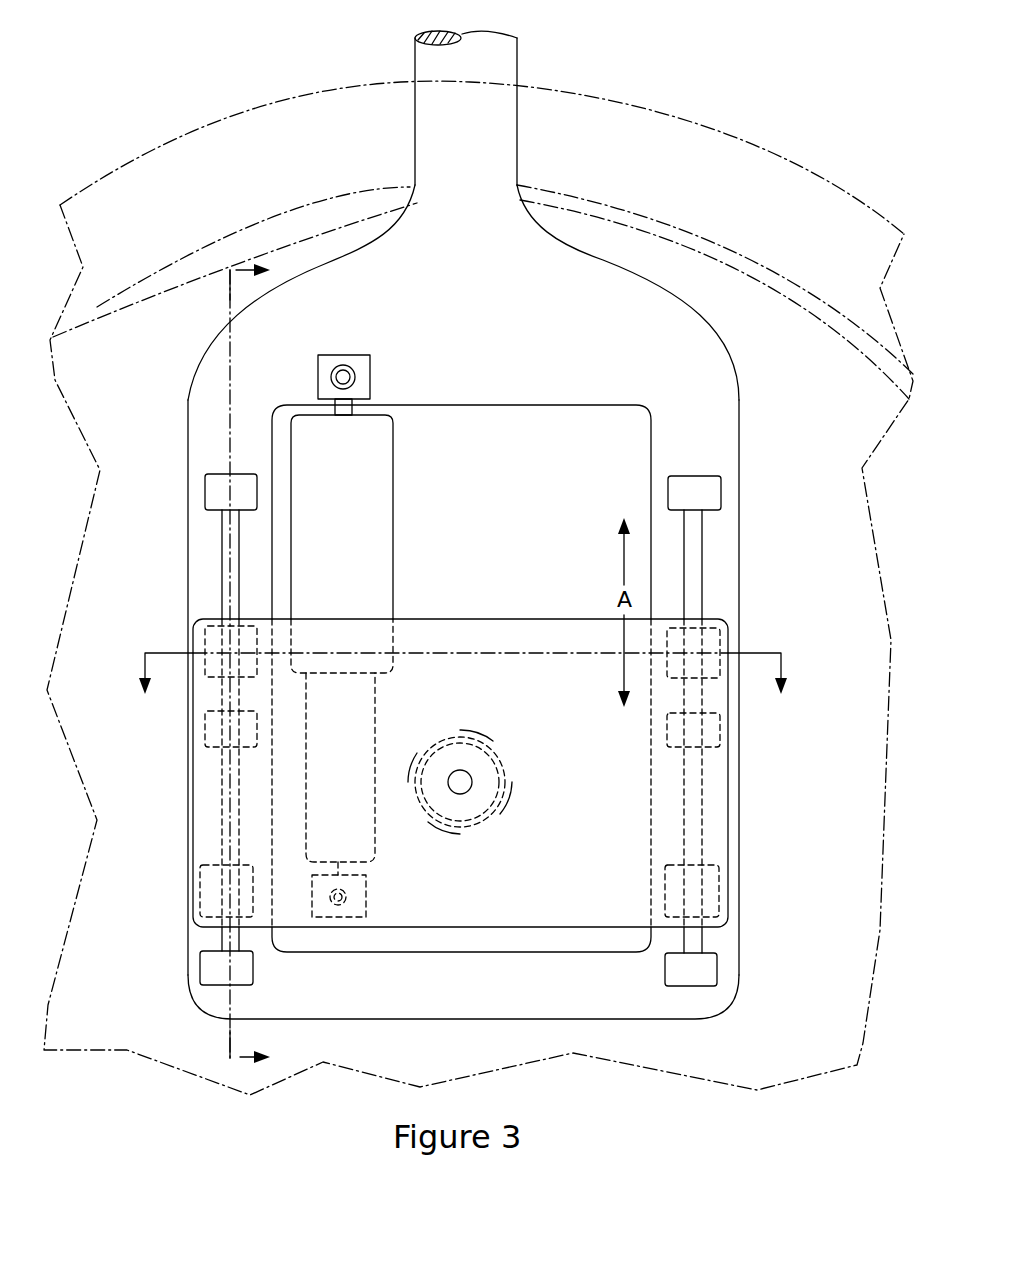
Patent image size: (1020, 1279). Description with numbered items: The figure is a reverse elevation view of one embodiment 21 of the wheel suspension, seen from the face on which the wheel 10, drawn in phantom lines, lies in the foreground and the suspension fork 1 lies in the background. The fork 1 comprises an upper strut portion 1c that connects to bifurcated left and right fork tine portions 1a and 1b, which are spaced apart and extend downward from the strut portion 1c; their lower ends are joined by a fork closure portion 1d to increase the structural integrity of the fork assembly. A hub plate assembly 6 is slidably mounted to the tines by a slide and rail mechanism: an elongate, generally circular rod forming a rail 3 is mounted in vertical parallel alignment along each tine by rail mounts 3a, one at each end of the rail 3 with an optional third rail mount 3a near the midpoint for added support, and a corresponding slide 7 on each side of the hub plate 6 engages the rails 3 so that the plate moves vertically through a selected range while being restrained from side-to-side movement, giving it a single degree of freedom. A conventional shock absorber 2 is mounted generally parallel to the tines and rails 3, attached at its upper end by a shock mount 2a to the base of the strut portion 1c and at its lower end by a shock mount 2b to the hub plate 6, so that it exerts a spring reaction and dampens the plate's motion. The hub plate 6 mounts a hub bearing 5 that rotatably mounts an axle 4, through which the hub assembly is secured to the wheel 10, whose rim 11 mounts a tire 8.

The suspension fork 1 is at (605, 262).
The right fork tine portion 1a is at (741, 513).
The left fork tine portion 1b is at (187, 458).
The upper fork strut portion 1c is at (518, 72).
The fork closure portion 1d is at (428, 1020).
The shock absorber 2 is at (394, 522).
The upper shock mount 2a is at (350, 366).
The lower shock mount 2b is at (352, 897).
The rail 3 is at (220, 584).
The rail mount 3a is at (723, 480).
The axle 4 is at (472, 782).
The hub bearing 5 is at (470, 735).
The hub plate assembly 6 is at (445, 618).
The slide 7 is at (205, 628).
The tire 8 is at (195, 196).
The wheel 10 is at (873, 450).
The rim 11 is at (78, 343).
The wheel suspension embodiment 21 is at (714, 58).